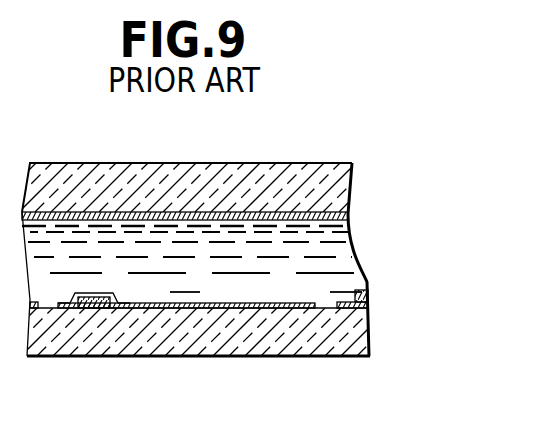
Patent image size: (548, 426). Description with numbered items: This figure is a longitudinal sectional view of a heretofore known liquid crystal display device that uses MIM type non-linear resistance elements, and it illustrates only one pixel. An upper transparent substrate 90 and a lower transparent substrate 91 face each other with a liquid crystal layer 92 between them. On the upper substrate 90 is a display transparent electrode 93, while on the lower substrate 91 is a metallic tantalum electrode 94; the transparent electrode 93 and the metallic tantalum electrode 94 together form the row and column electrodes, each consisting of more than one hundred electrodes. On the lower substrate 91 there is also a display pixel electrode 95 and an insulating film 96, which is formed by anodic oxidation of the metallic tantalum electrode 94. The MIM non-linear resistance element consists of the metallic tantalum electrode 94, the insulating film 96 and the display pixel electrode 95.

The upper transparent substrate 90 is at (322, 180).
The lower transparent substrate 91 is at (320, 340).
The liquid crystal layer 92 is at (353, 247).
The display transparent electrode 93 is at (215, 212).
The metallic tantalum electrode 94 is at (86, 308).
The display pixel electrode 95 is at (262, 309).
The insulating film 96 is at (107, 308).